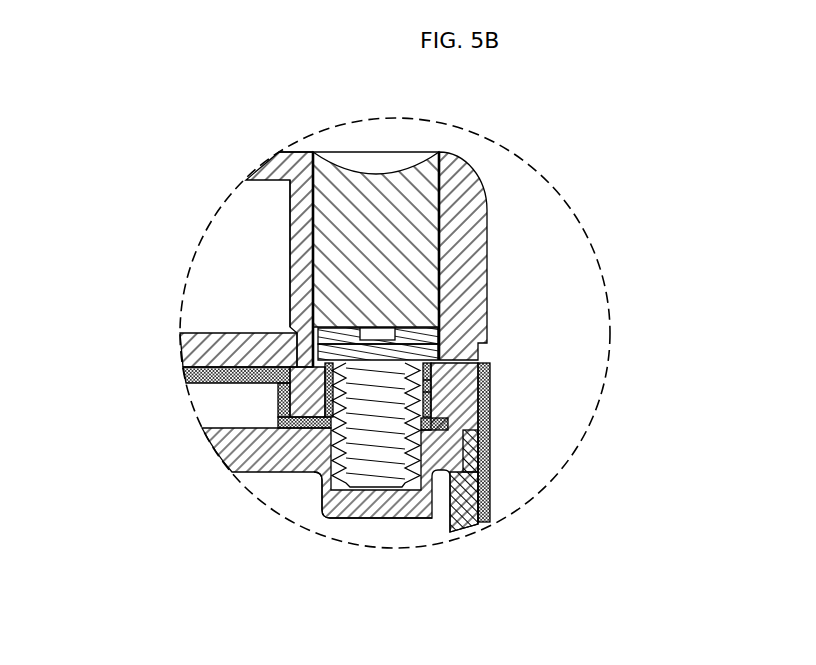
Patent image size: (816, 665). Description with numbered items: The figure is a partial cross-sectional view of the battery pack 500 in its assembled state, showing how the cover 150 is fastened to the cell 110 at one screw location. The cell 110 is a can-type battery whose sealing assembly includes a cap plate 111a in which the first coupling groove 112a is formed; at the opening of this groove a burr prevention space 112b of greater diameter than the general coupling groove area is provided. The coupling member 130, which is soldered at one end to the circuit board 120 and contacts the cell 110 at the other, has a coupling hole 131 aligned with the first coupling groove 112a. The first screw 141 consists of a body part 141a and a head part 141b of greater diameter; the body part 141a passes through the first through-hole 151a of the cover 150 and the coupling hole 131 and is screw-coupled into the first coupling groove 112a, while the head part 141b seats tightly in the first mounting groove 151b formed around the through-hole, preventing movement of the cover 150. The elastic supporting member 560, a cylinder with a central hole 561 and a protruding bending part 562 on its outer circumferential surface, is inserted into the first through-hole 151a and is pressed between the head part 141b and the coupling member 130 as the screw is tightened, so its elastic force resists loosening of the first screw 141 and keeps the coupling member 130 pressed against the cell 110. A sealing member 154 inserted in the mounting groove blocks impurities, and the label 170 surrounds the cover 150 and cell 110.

The battery pack 500 is at (534, 161).
The cover 150 is at (477, 180).
The sealing member 154 is at (391, 196).
The first screw 141 is at (550, 334).
The body part 141a is at (436, 360).
The head part 141b is at (433, 329).
The circuit board 120 is at (213, 357).
The first through-hole 151a is at (183, 373).
The first mounting groove 151b is at (297, 290).
The elastic supporting member 560 is at (536, 405).
The hole 561 is at (437, 410).
The bending part 562 is at (433, 388).
The label 170 is at (490, 442).
The coupling member 130 is at (222, 455).
The coupling hole 131 is at (280, 462).
The cap plate 111a is at (358, 507).
The first coupling groove 112a is at (410, 520).
The burr prevention space 112b is at (480, 473).
The cell 110 is at (404, 489).